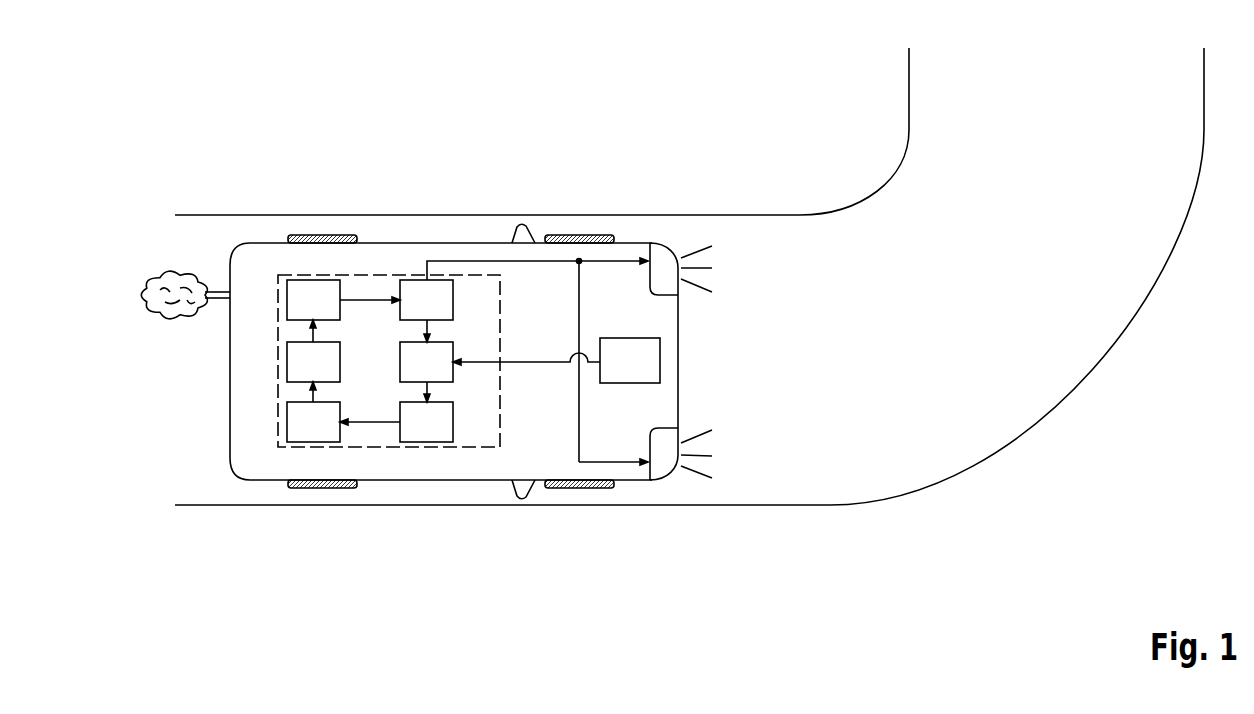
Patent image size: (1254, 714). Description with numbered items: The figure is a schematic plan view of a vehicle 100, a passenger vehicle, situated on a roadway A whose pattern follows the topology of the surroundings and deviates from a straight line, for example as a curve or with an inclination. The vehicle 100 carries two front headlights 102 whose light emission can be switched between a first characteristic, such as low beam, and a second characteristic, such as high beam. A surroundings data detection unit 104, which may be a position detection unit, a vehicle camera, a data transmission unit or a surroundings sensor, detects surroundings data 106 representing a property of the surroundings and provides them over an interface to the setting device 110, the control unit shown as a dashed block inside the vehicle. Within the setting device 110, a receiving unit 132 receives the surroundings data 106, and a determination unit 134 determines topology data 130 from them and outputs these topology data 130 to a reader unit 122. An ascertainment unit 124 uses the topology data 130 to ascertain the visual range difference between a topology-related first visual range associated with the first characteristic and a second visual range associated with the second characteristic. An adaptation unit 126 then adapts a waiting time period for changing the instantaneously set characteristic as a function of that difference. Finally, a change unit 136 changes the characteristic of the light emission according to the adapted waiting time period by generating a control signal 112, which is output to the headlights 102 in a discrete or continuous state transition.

The vehicle 100 is at (233, 415).
The headlights 102 is at (662, 253).
The surroundings data detection unit 104 is at (662, 362).
The surroundings data 106 is at (537, 363).
The setting device 110 is at (393, 273).
The control signal 112 is at (498, 261).
The reader unit 122 is at (300, 443).
The ascertainment unit 124 is at (287, 360).
The adaptation unit 126 is at (300, 280).
The topology data 130 is at (378, 422).
The receiving unit 132 is at (453, 350).
The determination unit 134 is at (444, 442).
The change unit 136 is at (416, 280).
The roadway A is at (748, 215).